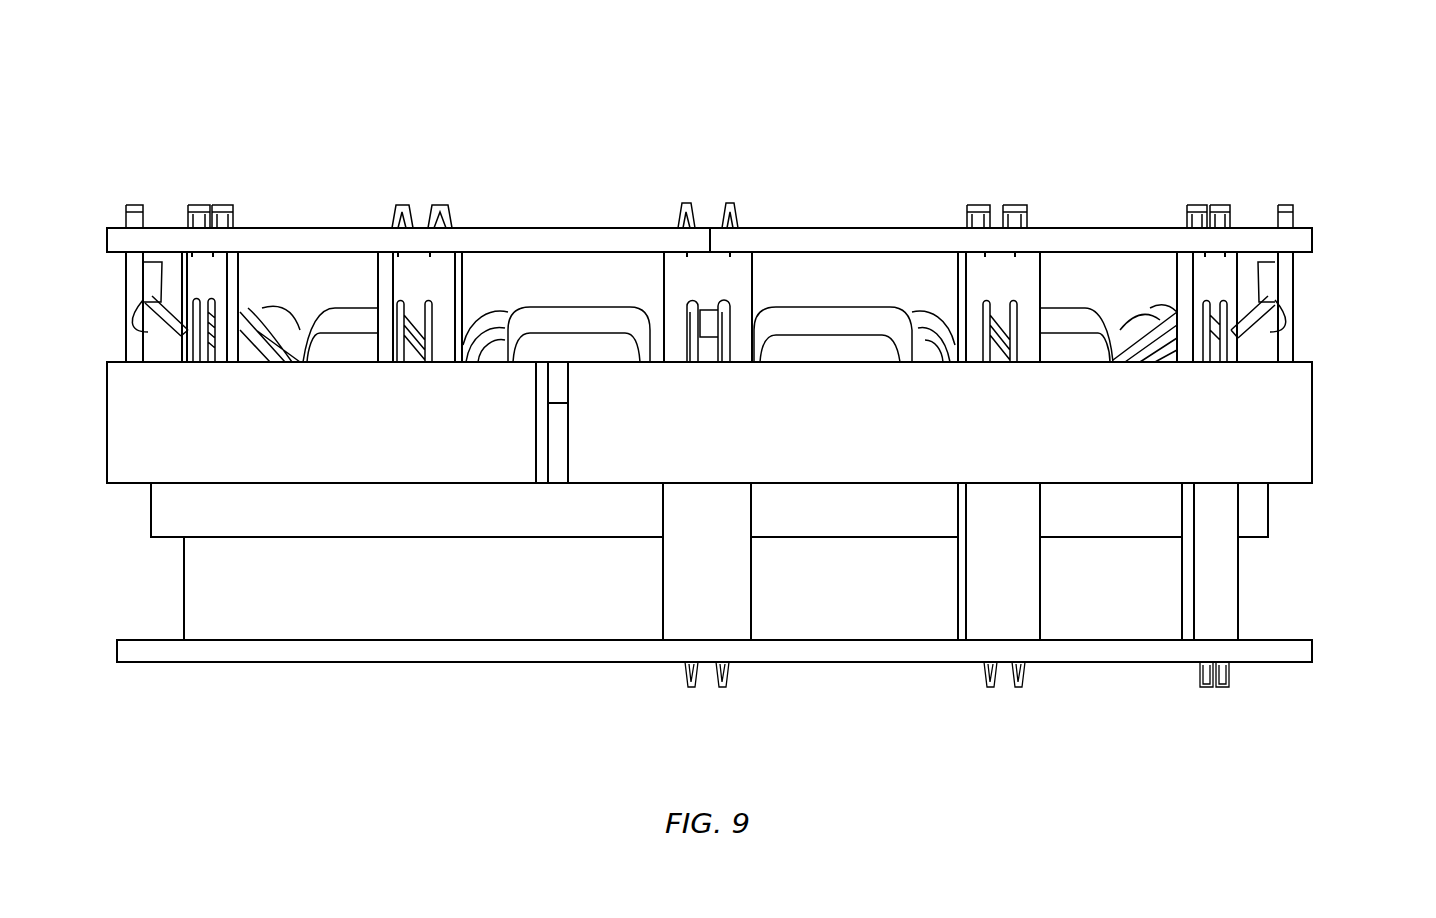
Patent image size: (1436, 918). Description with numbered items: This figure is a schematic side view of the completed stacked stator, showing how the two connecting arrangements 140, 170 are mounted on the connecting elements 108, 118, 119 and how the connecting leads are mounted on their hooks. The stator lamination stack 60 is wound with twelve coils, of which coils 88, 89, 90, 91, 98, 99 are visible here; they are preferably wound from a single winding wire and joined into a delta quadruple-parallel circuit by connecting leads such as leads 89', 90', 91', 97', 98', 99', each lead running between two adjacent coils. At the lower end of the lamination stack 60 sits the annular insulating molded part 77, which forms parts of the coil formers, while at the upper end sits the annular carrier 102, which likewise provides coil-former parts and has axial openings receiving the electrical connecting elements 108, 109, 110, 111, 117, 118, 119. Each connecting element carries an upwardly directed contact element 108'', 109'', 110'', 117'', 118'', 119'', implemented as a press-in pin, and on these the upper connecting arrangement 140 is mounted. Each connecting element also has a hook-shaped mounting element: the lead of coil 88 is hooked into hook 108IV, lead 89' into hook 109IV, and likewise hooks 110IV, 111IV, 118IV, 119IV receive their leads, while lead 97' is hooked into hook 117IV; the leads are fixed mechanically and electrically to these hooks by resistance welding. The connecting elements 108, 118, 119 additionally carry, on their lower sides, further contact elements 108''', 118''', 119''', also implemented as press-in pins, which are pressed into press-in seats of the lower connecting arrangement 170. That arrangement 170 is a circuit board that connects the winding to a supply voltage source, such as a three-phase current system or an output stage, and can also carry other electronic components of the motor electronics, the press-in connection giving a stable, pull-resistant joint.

The connecting arrangement 140 is at (1303, 240).
The carrier 102 is at (962, 433).
The stator lamination stack 60 is at (413, 522).
The annular insulating molded part 77 is at (413, 602).
The connecting arrangement 170 is at (1295, 652).
The connecting element 108 is at (707, 446).
The connecting element 119 is at (999, 446).
The connecting element 118 is at (1207, 446).
The contact element 108''' is at (634, 704).
The contact element 119''' is at (931, 704).
The contact element 118''' is at (1142, 704).
The hook-shaped mounting element 111IV is at (127, 280).
The connecting element 111 is at (133, 262).
The connecting lead 91' is at (190, 246).
The connecting element 110 is at (210, 307).
The contact element 110'' is at (279, 183).
The hook-shaped mounting element 110IV is at (215, 310).
The coil 91 is at (275, 306).
The connecting lead 90' is at (343, 281).
The coil 90 is at (349, 300).
The connecting element 109 is at (420, 307).
The contact element 109'' is at (467, 173).
The hook-shaped mounting element 109IV is at (435, 318).
The connecting lead 89' is at (517, 276).
The coil 89 is at (579, 308).
The contact element 108'' is at (751, 173).
The hook-shaped mounting element 108IV is at (700, 320).
The coil 88 is at (830, 323).
The connecting lead 99' is at (955, 230).
The contact element 119'' is at (1043, 173).
The hook-shaped mounting element 119IV is at (1010, 320).
The coil 99 is at (1077, 305).
The coil 98 is at (1132, 319).
The connecting lead 98' is at (1189, 203).
The contact element 118'' is at (1256, 173).
The hook-shaped mounting element 118IV is at (1217, 318).
The connecting element 117 is at (1341, 312).
The contact element 117'' is at (1355, 183).
The hook-shaped mounting element 117IV is at (1267, 282).
The connecting lead 97' is at (1308, 317).